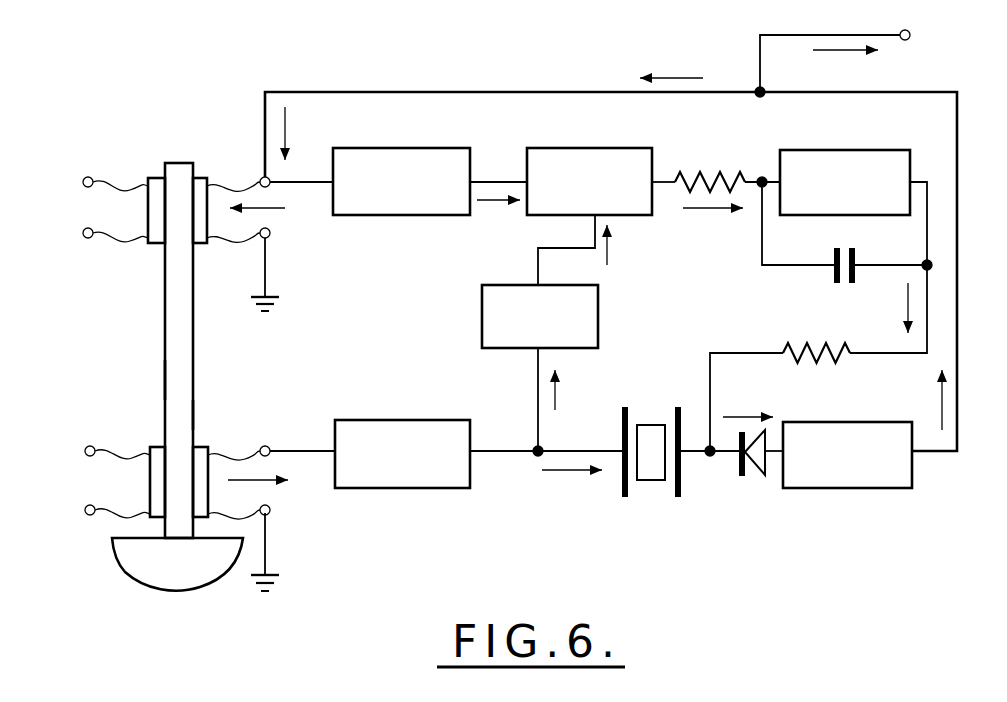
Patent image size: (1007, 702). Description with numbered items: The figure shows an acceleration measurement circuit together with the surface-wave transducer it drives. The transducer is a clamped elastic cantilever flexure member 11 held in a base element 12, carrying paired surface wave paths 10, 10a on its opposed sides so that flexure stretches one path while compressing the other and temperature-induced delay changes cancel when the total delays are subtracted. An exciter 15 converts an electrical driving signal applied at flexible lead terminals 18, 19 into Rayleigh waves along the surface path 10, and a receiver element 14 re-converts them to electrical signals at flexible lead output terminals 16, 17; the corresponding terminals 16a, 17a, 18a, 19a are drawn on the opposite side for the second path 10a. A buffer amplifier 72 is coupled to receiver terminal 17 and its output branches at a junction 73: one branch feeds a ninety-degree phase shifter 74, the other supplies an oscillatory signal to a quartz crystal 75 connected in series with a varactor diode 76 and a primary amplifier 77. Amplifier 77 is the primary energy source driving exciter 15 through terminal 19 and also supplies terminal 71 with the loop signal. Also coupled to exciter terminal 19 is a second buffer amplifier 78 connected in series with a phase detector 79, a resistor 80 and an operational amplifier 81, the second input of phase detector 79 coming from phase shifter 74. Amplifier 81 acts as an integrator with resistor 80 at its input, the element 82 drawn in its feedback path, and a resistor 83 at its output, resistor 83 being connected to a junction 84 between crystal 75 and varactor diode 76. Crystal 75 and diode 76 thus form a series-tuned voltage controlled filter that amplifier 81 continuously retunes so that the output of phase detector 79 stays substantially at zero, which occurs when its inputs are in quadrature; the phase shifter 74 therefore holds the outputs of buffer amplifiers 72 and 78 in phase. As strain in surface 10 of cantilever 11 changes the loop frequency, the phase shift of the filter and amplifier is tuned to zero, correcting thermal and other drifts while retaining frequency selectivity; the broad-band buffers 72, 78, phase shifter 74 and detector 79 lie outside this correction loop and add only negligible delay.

The surface wave path 10 is at (194, 352).
The surface wave path 10a is at (165, 380).
The cantilever flexure member 11 is at (196, 415).
The base element 12 is at (157, 578).
The receiver element 14 is at (196, 447).
The exciter 15 is at (196, 178).
The flexible lead output terminal 16 is at (270, 509).
The terminal 16a is at (90, 505).
The flexible lead output terminal 17 is at (265, 446).
The terminal 17a is at (90, 446).
The flexible lead terminal 18 is at (269, 236).
The terminal 18a is at (88, 238).
The flexible lead terminal 19 is at (262, 178).
The terminal 19a is at (88, 177).
The terminal 71 is at (910, 36).
The buffer amplifier 72 is at (407, 489).
The junction 73 is at (536, 447).
The 90° phase shifter 74 is at (482, 312).
The quartz crystal 75 is at (650, 482).
The varactor diode 76 is at (760, 476).
The primary amplifier 77 is at (878, 489).
The buffer amplifier 78 is at (400, 148).
The phase detector 79 is at (597, 148).
The resistor 80 is at (718, 172).
The operational amplifier 81 is at (845, 150).
The capacitor 82 is at (832, 280).
The resistor 83 is at (812, 346).
The junction 84 is at (710, 460).